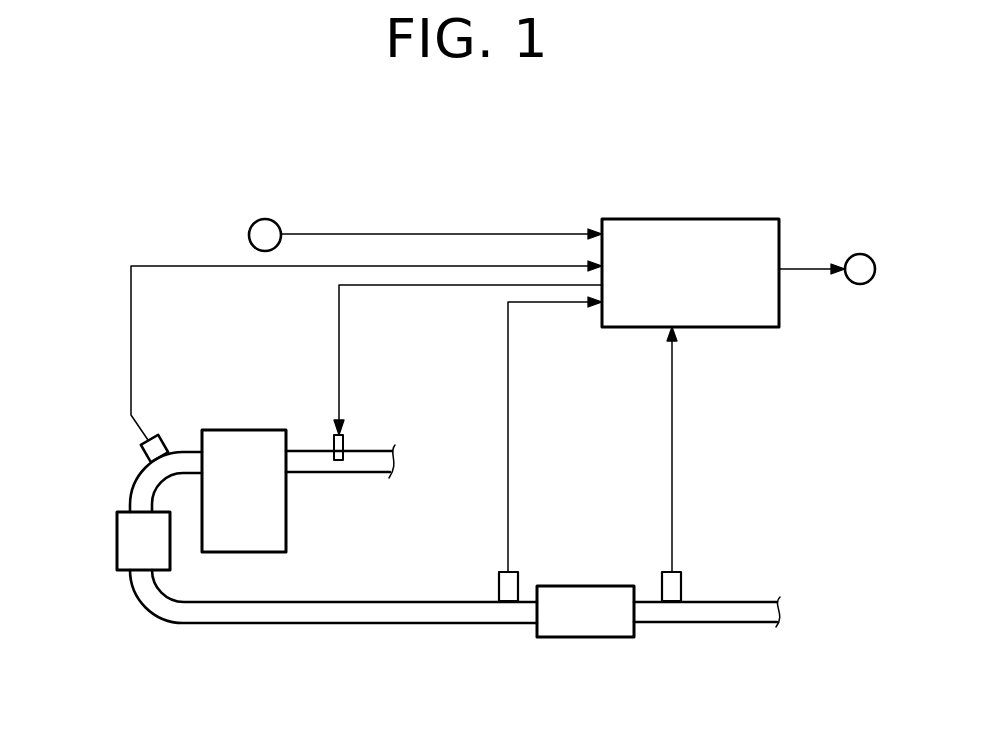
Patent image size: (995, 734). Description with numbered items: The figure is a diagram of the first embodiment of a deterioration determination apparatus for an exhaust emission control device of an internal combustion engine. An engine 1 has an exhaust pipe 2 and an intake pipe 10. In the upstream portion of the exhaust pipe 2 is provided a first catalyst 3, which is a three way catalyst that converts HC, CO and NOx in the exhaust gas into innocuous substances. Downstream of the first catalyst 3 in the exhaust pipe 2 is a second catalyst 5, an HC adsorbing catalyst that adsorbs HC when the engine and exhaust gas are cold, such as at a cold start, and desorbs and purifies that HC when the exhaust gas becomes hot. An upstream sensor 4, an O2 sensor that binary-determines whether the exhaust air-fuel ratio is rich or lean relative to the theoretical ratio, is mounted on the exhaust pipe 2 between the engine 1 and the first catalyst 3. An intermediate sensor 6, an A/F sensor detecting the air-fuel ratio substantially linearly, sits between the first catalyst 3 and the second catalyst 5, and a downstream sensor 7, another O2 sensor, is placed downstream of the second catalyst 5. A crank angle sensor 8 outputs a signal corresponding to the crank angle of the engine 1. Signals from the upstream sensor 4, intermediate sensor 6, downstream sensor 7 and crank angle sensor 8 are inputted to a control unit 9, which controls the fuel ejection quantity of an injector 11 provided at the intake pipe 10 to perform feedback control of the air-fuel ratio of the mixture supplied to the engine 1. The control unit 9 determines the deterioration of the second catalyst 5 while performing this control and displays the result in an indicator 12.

The engine 1 is at (245, 428).
The exhaust pipe 2 is at (135, 487).
The first catalyst 3 is at (117, 535).
The upstream sensor 4 is at (140, 452).
The second catalyst 5 is at (549, 638).
The intermediate sensor 6 is at (519, 574).
The downstream sensor 7 is at (682, 574).
The crank angle sensor 8 is at (258, 218).
The control unit 9 is at (690, 218).
The intake pipe 10 is at (353, 475).
The injector 11 is at (346, 448).
The indicator 12 is at (862, 253).